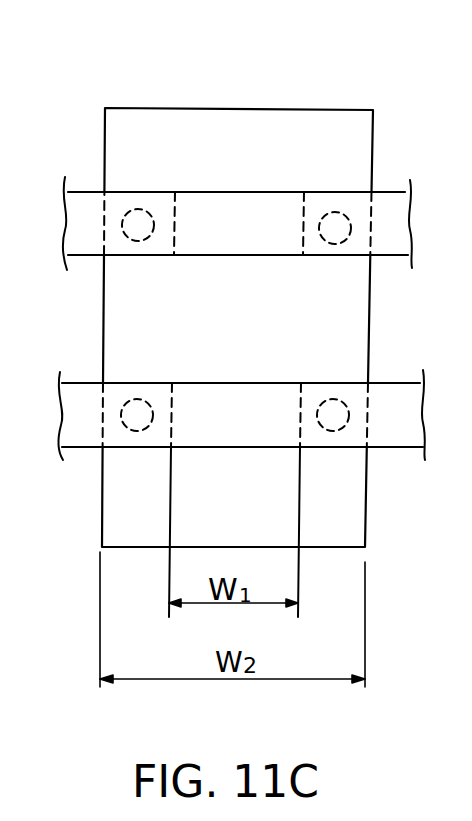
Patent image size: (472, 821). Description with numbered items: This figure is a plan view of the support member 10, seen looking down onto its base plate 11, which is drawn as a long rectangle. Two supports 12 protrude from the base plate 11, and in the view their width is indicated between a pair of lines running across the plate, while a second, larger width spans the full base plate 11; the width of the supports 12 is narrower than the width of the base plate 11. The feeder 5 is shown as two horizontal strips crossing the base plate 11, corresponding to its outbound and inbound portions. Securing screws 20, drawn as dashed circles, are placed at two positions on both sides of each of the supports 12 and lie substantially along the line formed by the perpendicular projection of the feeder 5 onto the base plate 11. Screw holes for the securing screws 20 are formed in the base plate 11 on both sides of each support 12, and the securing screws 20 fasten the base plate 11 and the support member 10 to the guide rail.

The support member 10 is at (230, 310).
The base plate 11 is at (232, 122).
The support 12 is at (242, 203).
The feeder 5 is at (83, 200).
The securing screw 20 is at (347, 217).